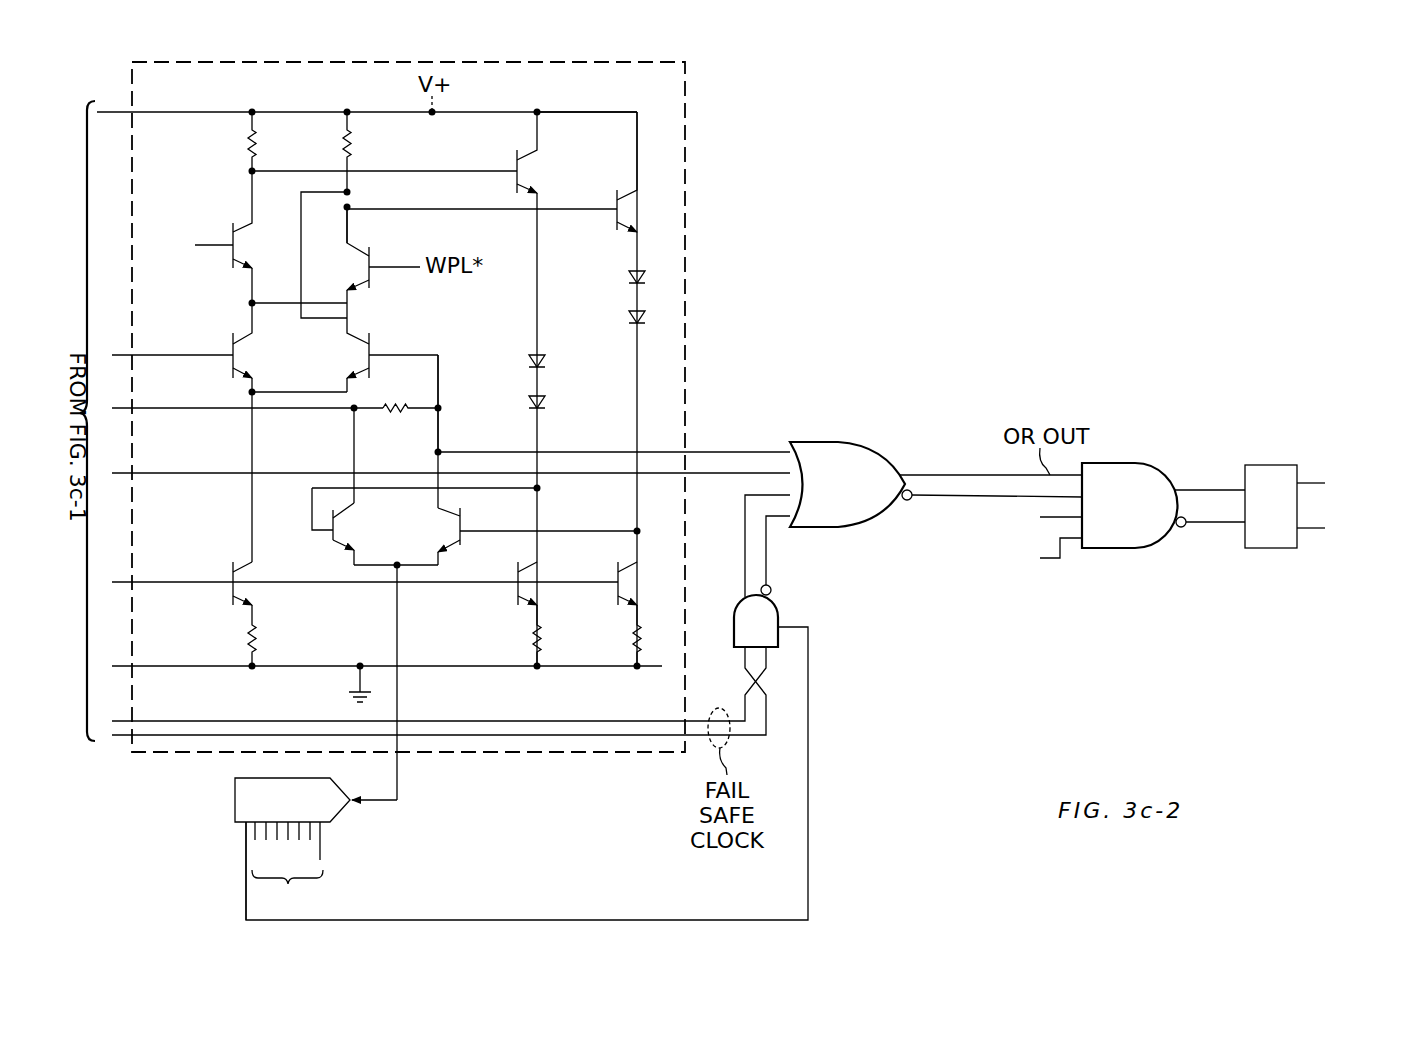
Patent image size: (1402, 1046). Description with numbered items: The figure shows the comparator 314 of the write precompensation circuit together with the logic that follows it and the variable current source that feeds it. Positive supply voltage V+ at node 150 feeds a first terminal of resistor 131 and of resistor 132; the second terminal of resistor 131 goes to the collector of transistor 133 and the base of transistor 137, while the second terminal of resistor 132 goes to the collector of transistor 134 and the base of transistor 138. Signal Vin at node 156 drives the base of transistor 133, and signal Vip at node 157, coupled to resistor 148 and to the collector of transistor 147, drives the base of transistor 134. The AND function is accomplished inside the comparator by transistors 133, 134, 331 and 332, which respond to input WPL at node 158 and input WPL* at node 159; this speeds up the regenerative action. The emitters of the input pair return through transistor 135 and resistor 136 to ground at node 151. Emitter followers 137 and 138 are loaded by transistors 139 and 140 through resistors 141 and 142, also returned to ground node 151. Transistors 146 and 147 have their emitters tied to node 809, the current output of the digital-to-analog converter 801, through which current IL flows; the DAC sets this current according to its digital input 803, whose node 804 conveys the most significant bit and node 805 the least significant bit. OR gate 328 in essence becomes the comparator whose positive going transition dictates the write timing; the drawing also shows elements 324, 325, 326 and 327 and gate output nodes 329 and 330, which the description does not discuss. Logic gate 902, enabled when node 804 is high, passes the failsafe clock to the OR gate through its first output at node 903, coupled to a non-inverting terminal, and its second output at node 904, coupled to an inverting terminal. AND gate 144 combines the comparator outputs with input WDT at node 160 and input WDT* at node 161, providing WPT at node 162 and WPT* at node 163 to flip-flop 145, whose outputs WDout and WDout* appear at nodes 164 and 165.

The resistor 131 is at (247, 150).
The resistor 132 is at (354, 150).
The transistor 133 is at (230, 372).
The transistor 134 is at (378, 347).
The transistor 135 is at (230, 597).
The resistor 136 is at (260, 632).
The transistor 137 is at (514, 160).
The transistor 138 is at (614, 225).
The transistor 139 is at (514, 597).
The transistor 140 is at (614, 597).
The resistor 141 is at (532, 632).
The resistor 142 is at (632, 632).
The AND gate 144 is at (1130, 550).
The flip-flop 145 is at (1272, 550).
The transistor 146 is at (336, 548).
The transistor 147 is at (464, 523).
The resistor 148 is at (395, 416).
The node 150 is at (583, 118).
The node 151 is at (356, 674).
The node 156 is at (220, 354).
The node 157 is at (440, 372).
The node 158 is at (220, 244).
The node 159 is at (378, 283).
The node 160 is at (1050, 518).
The node 161 is at (1048, 562).
The node 162 is at (1186, 487).
The node 163 is at (1197, 527).
The node 164 is at (1304, 482).
The node 165 is at (1304, 534).
The comparator 314 is at (685, 135).
The diode 324 is at (546, 365).
The diode 325 is at (546, 406).
The diode 326 is at (630, 282).
The diode 327 is at (630, 322).
The OR gate 328 is at (849, 441).
The OR gate output line 329 is at (940, 472).
The OR gate inverted output line 330 is at (920, 500).
The transistor 331 is at (230, 262).
The transistor 332 is at (370, 254).
The digital-to-analog converter 801 is at (233, 800).
The digital input 803 is at (287, 893).
The node 804 is at (244, 886).
The node 805 is at (325, 830).
The node 809 is at (399, 788).
The logic gate 902 is at (779, 620).
The node 903 is at (740, 565).
The node 904 is at (770, 562).